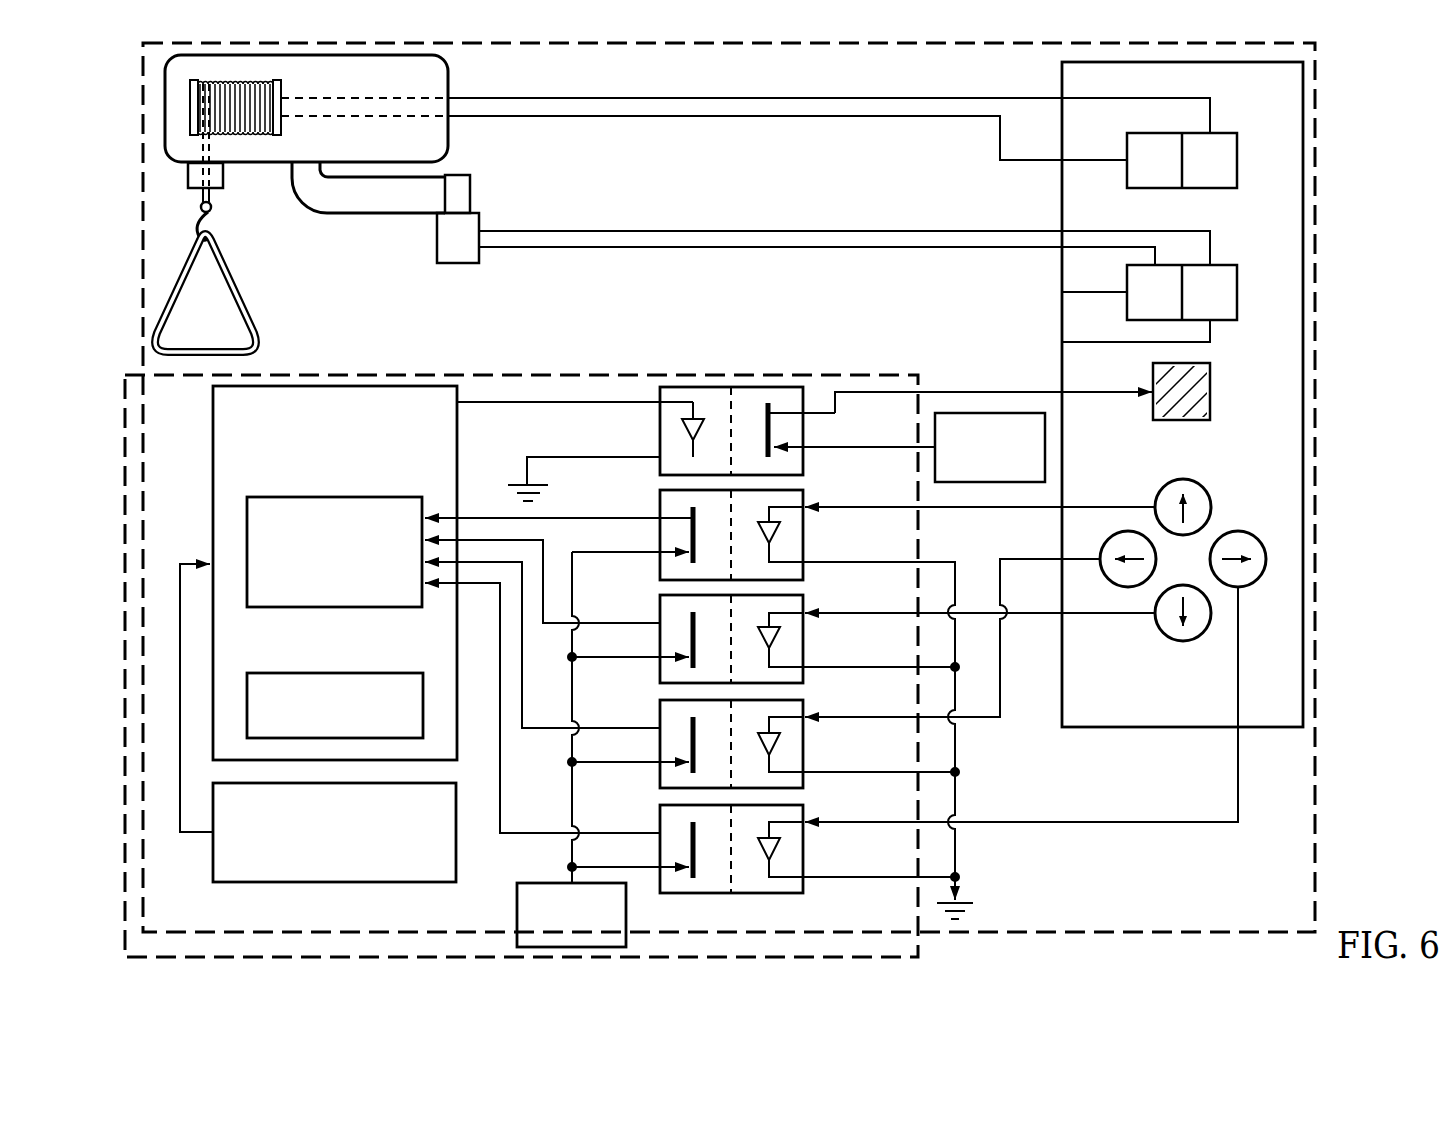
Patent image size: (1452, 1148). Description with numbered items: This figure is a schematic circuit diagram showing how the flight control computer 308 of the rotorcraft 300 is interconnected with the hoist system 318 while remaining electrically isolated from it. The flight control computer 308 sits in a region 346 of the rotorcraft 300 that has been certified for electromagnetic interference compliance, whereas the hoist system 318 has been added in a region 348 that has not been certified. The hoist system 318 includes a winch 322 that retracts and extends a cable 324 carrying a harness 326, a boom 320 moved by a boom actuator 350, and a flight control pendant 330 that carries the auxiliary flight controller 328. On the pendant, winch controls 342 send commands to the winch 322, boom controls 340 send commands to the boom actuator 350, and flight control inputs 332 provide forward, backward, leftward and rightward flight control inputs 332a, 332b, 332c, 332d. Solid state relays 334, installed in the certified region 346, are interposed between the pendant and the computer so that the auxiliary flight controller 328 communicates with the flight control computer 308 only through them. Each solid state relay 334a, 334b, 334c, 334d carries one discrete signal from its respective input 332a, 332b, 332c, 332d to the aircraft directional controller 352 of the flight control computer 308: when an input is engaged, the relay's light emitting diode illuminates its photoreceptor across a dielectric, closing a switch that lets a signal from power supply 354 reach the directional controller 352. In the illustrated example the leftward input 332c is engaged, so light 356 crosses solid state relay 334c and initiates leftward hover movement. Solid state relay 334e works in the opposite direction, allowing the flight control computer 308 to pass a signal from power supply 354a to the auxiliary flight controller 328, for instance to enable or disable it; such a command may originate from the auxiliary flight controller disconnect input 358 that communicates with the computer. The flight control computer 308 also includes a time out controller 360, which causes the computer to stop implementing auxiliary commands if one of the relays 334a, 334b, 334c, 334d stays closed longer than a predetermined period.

The rotorcraft 300 is at (1338, 629).
The flight control computer 308 is at (213, 477).
The hoist system 318 is at (1333, 150).
The boom 320 is at (379, 215).
The winch 322 is at (450, 90).
The cable 324 is at (208, 168).
The harness 326 is at (238, 270).
The auxiliary flight controller 328 is at (1181, 740).
The flight control pendant 330 is at (1062, 85).
The flight control inputs 332 is at (1191, 575).
The forward flight control input 332a is at (1197, 484).
The backward flight control input 332b is at (1190, 641).
The leftward flight control input 332c is at (1130, 532).
The rightward flight control input 332d is at (1243, 532).
The solid state relays 334 is at (737, 671).
The solid state relay 334a is at (803, 530).
The solid state relay 334b is at (803, 633).
The solid state relay 334c is at (803, 738).
The solid state relay 334d is at (803, 842).
The solid state relay 334e is at (803, 432).
The boom controls 340 is at (1227, 322).
The winch controls 342 is at (1222, 131).
The region 346 is at (521, 369).
The region 348 is at (1318, 478).
The boom actuator 350 is at (458, 265).
The aircraft directional controller 352 is at (305, 608).
The power supply 354 is at (517, 913).
The power supply 354a is at (990, 412).
The light 356 is at (760, 743).
The auxiliary flight controller disconnect input 358 is at (334, 883).
The time out controller 360 is at (364, 672).